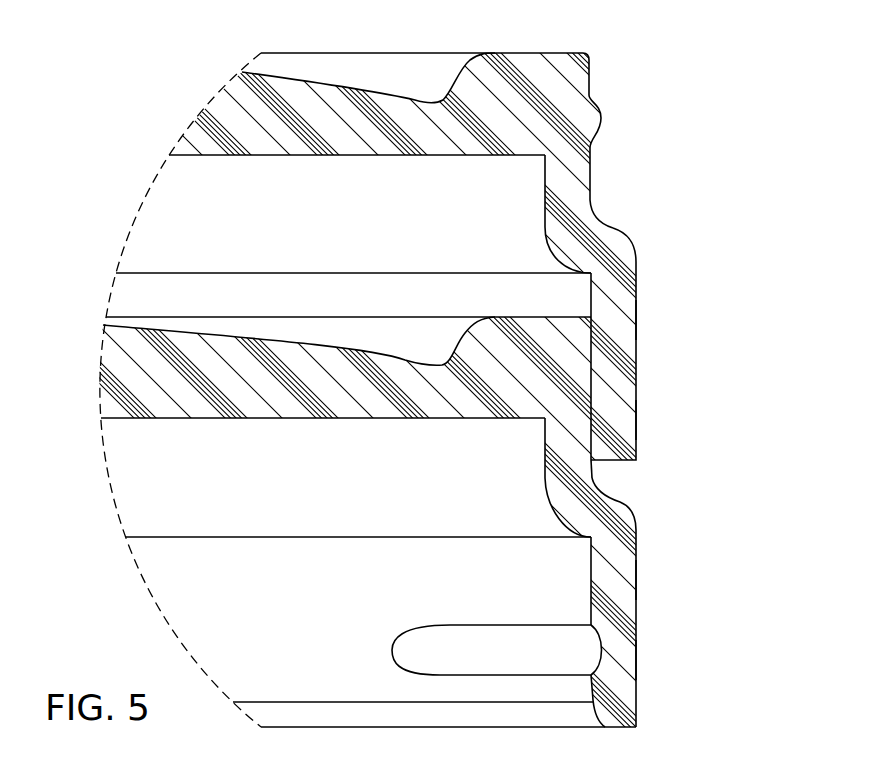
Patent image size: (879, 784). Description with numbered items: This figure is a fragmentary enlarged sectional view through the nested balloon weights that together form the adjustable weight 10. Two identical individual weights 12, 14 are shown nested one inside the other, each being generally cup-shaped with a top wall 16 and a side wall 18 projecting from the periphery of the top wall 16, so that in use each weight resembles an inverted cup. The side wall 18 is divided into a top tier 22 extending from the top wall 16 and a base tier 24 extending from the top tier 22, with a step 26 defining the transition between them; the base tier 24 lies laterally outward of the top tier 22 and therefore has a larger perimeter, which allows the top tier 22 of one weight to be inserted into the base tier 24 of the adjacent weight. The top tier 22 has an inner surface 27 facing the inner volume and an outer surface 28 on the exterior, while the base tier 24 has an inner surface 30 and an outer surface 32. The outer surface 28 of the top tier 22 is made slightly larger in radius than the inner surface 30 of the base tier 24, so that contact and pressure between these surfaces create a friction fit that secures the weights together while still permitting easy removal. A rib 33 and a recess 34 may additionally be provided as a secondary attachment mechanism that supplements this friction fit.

The adjustable weight 10 is at (776, 71).
The individual weight 12 is at (655, 729).
The individual weight 14 is at (596, 49).
The top wall 16 is at (332, 83).
The side wall 18 is at (636, 267).
The top tier 22 is at (592, 162).
The base tier 24 is at (630, 657).
The step 26 is at (612, 227).
The inner surface 27 is at (545, 184).
The outer surface 28 is at (592, 197).
The inner surface 30 is at (591, 293).
The outer surface 32 is at (636, 307).
The rib 33 is at (598, 113).
The recess 34 is at (603, 648).